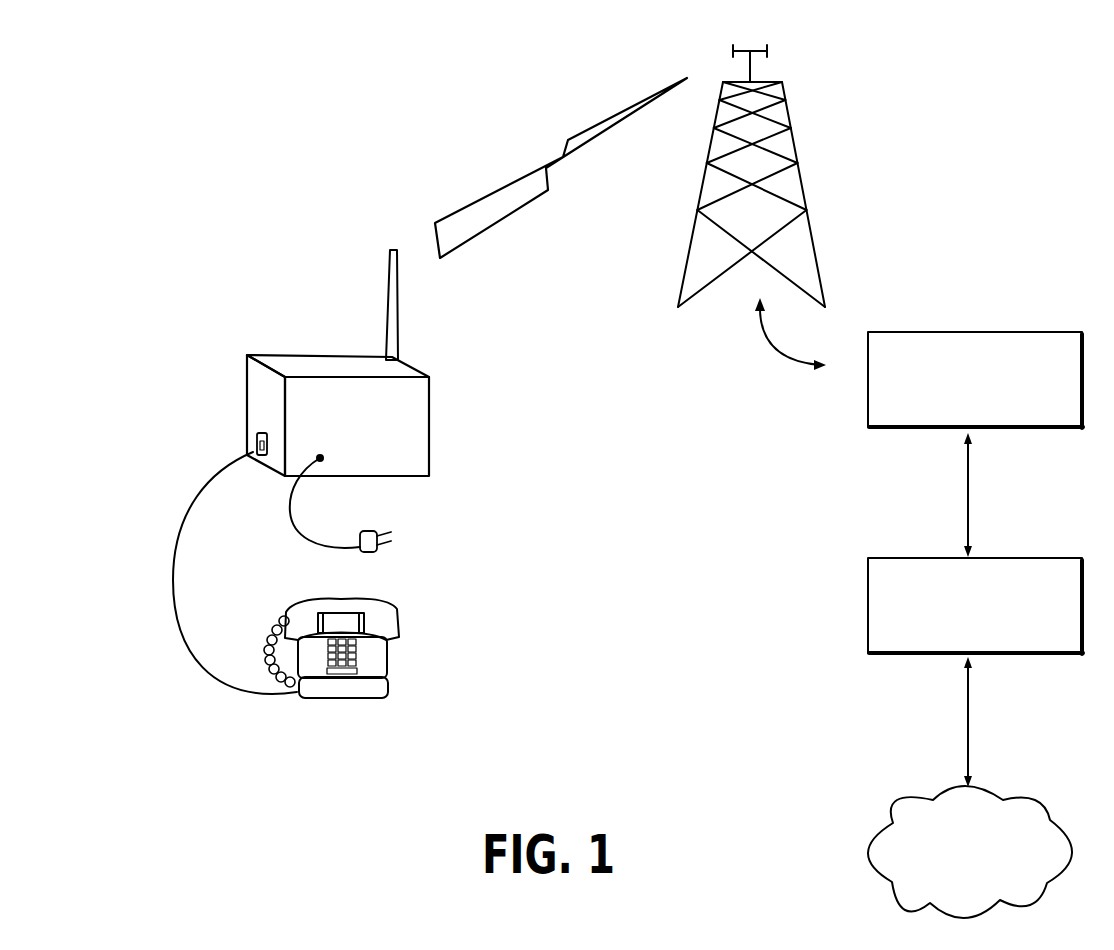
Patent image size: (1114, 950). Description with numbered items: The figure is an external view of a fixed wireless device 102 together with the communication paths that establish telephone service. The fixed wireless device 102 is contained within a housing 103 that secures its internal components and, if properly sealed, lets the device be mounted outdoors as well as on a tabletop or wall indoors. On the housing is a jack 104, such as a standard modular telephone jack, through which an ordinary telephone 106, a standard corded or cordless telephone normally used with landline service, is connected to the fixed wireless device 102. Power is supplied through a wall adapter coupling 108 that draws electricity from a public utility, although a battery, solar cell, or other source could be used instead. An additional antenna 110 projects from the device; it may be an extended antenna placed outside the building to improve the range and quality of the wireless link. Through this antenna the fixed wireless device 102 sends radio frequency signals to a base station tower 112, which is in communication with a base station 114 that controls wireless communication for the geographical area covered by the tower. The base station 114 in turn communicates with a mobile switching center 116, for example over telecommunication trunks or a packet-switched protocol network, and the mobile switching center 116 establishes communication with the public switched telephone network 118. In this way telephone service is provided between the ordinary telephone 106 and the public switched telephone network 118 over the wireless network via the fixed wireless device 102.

The fixed wireless device 102 is at (327, 454).
The housing 103 is at (418, 372).
The jack 104 is at (256, 452).
The ordinary telephone 106 is at (377, 604).
The wall adapter coupling 108 is at (312, 540).
The additional antenna 110 is at (389, 250).
The base station tower 112 is at (751, 46).
The base station 114 is at (1053, 332).
The mobile switching center 116 is at (1053, 558).
The public switched telephone network 118 is at (1055, 818).